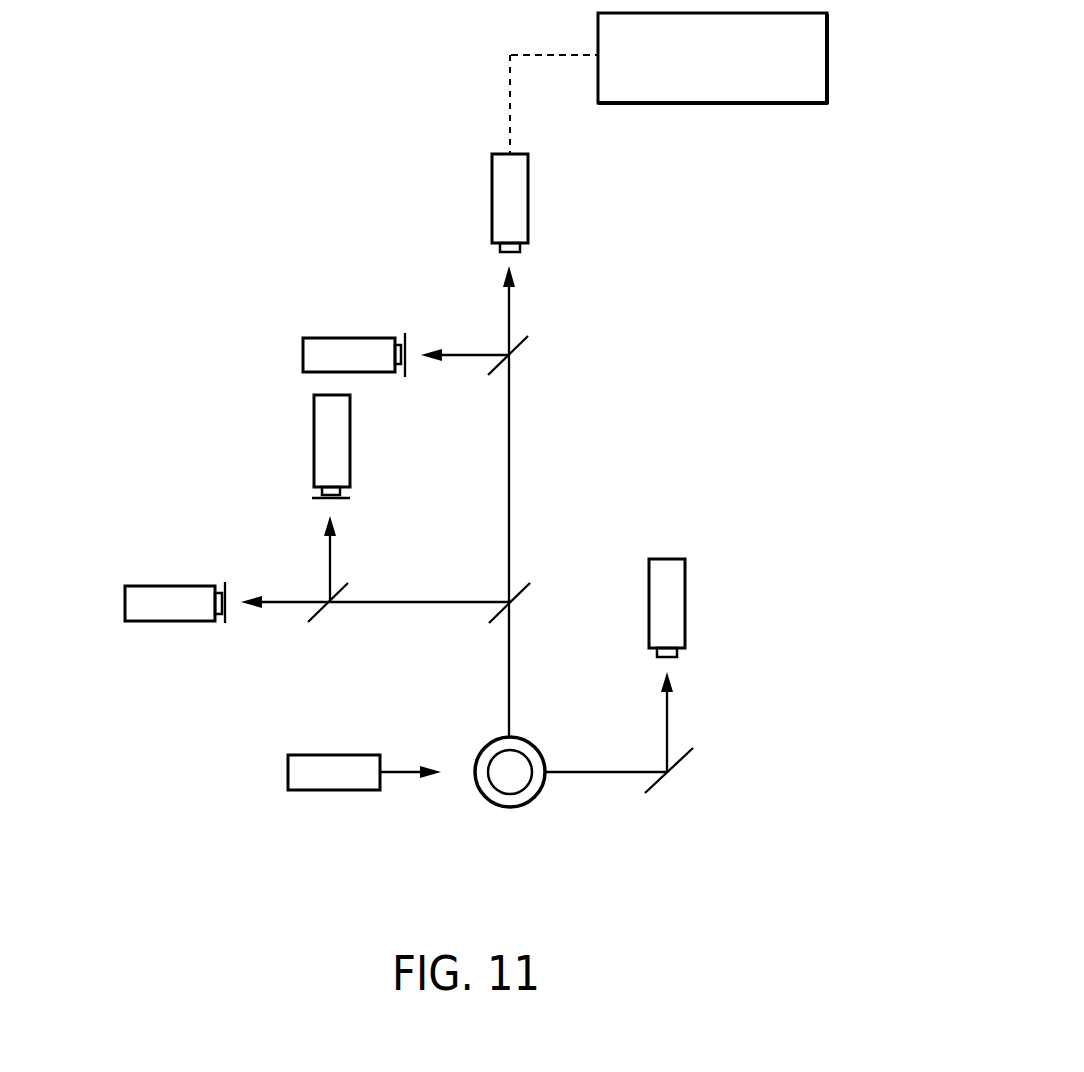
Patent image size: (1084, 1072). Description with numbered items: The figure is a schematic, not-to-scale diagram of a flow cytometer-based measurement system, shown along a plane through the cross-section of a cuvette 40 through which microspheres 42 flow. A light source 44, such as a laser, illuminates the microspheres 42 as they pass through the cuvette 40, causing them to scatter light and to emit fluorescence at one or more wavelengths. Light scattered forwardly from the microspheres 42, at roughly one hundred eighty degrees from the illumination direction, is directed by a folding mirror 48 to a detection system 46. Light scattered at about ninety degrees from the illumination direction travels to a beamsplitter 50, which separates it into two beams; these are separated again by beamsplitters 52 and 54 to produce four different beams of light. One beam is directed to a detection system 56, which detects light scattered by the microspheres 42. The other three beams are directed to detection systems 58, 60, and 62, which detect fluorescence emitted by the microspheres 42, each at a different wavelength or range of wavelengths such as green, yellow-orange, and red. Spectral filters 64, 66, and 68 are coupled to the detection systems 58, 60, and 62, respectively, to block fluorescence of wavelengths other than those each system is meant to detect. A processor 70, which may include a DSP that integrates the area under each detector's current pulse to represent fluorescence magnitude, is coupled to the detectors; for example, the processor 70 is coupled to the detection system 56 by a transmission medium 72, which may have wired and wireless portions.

The cuvette 40 is at (523, 808).
The microspheres 42 is at (493, 788).
The light source 44 is at (287, 772).
The detection system 46 is at (686, 597).
The folding mirror 48 is at (680, 767).
The beamsplitter 50 is at (522, 590).
The beamsplitter 52 is at (322, 615).
The beamsplitter 54 is at (520, 345).
The detection system 56 is at (529, 188).
The detection system 58 is at (312, 338).
The detection system 60 is at (350, 440).
The detection system 62 is at (152, 585).
The spectral filter 64 is at (407, 342).
The spectral filter 66 is at (348, 499).
The spectral filter 68 is at (227, 590).
The processor 70 is at (728, 70).
The transmission medium 72 is at (510, 98).